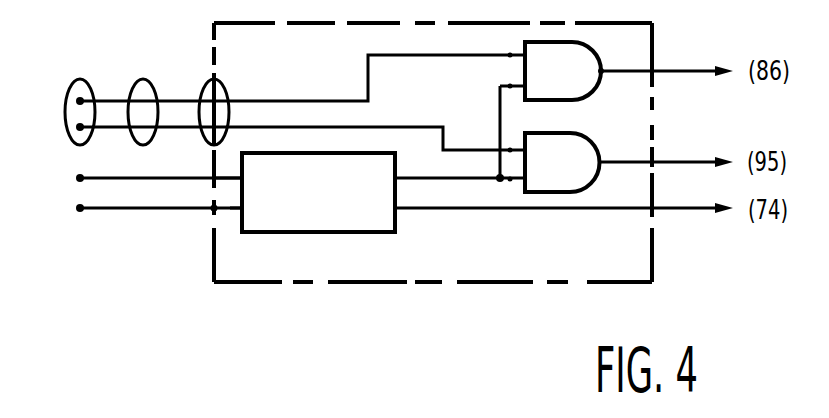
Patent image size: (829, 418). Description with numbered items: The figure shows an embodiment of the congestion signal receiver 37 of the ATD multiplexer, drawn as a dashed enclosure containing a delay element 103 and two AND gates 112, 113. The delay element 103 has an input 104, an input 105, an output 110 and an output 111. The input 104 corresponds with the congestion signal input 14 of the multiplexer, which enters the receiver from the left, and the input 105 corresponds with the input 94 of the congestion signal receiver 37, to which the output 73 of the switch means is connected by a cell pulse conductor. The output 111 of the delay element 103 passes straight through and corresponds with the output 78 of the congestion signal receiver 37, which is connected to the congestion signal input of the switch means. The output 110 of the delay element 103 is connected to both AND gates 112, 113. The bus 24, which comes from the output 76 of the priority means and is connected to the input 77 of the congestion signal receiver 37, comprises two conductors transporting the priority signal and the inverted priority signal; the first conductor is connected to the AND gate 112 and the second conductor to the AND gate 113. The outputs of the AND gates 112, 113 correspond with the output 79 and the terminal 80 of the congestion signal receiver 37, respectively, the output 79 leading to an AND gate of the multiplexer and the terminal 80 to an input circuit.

The congestion signal input 14 is at (77, 175).
The bus 24 is at (143, 78).
The congestion signal receiver 37 is at (592, 284).
The output 73 is at (79, 211).
The output 76 is at (79, 79).
The input 77 is at (221, 79).
The output 78 is at (656, 212).
The output 79 is at (654, 69).
The input 80 is at (656, 161).
The input 94 is at (212, 211).
The delay element 103 is at (353, 235).
The input 104 is at (242, 175).
The input 105 is at (243, 224).
The output 110 is at (397, 173).
The output 111 is at (398, 216).
The AND gate 112 is at (585, 97).
The AND gate 113 is at (586, 134).